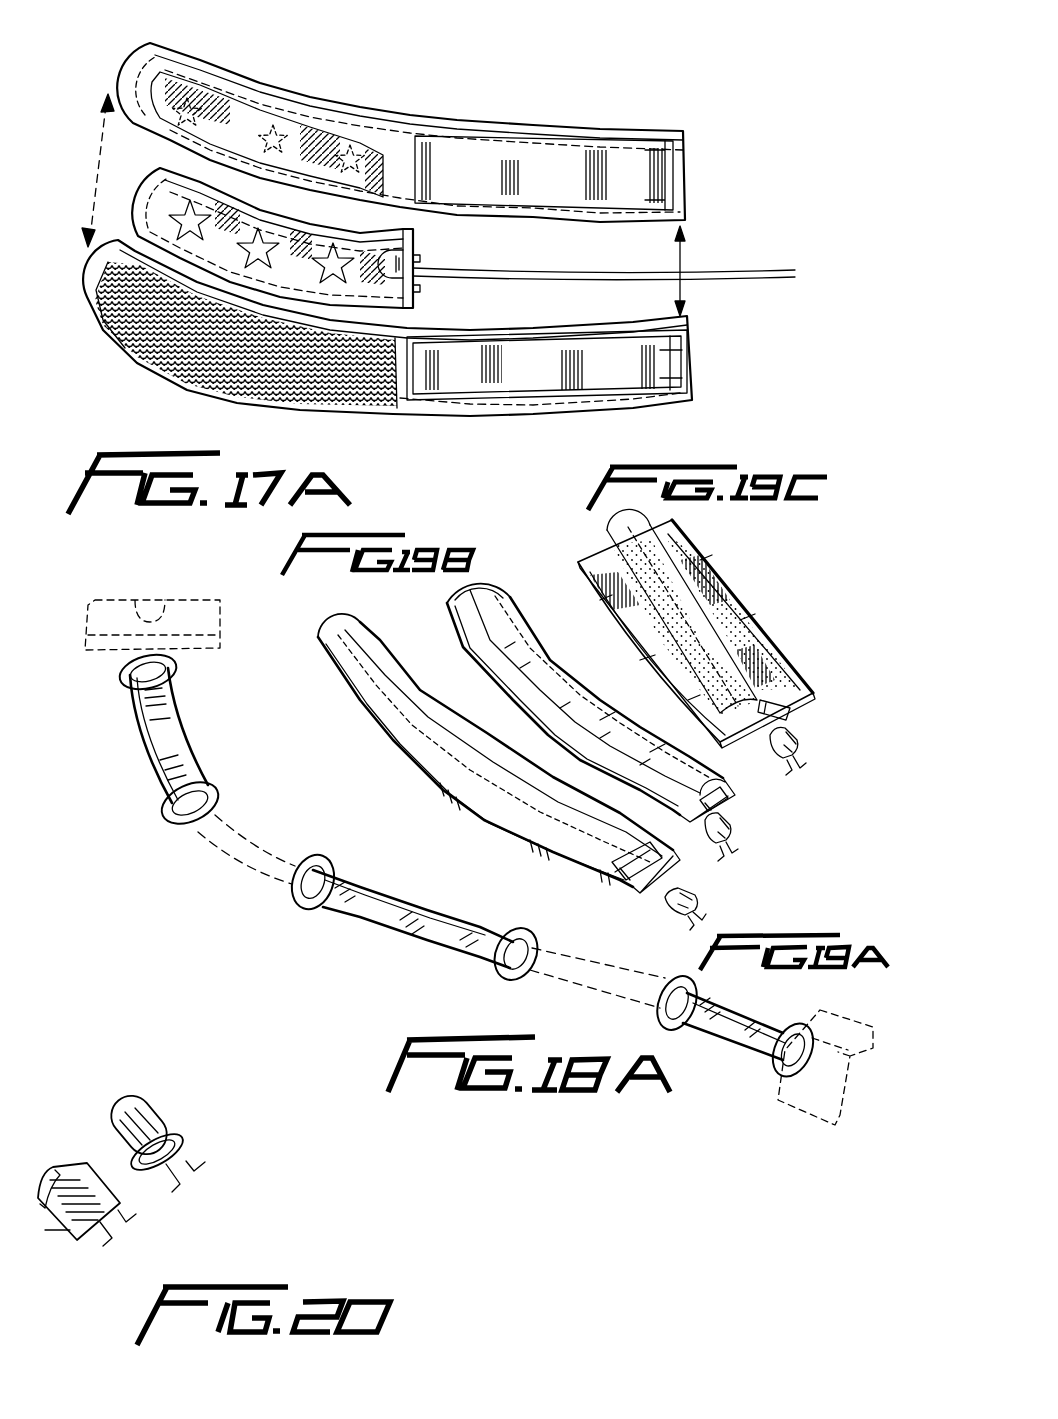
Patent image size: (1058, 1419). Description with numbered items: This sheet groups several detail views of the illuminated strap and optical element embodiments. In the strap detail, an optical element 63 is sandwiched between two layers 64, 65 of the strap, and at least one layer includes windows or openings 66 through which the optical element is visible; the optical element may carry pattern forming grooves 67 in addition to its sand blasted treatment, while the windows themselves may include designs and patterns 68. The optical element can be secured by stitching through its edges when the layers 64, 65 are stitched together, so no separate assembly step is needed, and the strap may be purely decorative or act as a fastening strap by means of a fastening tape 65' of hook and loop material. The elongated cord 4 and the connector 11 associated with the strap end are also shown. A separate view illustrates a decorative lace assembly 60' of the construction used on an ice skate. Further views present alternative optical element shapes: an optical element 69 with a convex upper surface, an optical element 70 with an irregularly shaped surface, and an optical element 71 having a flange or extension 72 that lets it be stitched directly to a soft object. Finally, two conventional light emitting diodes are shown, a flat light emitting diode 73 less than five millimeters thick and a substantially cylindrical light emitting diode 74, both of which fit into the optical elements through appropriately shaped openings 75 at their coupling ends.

In FIG. 17A, the tether cord 4 is at (732, 268).
In FIG. 17A, the connector socket 11 is at (418, 290).
In FIG. 18A, the lace assembly 60' is at (479, 862).
In FIG. 17A, the optical element 63 is at (400, 232).
In FIG. 17A, the layer 64 is at (640, 153).
In FIG. 17A, the layer 65 is at (387, 364).
In FIG. 17A, the fastening tape 65' is at (233, 343).
In FIG. 17A, the windows or openings 66 is at (320, 133).
In FIG. 17A, the pattern forming grooves 67 is at (137, 180).
In FIG. 17A, the designs and patterns 68 is at (207, 108).
In FIG. 19A, the optical element 69 is at (380, 710).
In FIG. 19B, the optical element 70 is at (503, 608).
In FIG. 19C, the optical element 71 is at (700, 628).
In FIG. 19C, the flange or extension 72 is at (688, 558).
In FIG. 19C, the light emitting diode 73 is at (768, 753).
In FIG. 19B, the light emitting diode 73 is at (730, 825).
In FIG. 19A, the light emitting diode 73 is at (700, 905).
In FIG. 20, the light emitting diode 73 is at (70, 1228).
In FIG. 20, the light emitting diode 74 is at (150, 1107).
In FIG. 17A, the openings 75 is at (418, 258).
In FIG. 19C, the openings 75 is at (790, 710).
In FIG. 19B, the openings 75 is at (715, 790).
In FIG. 19A, the openings 75 is at (605, 876).